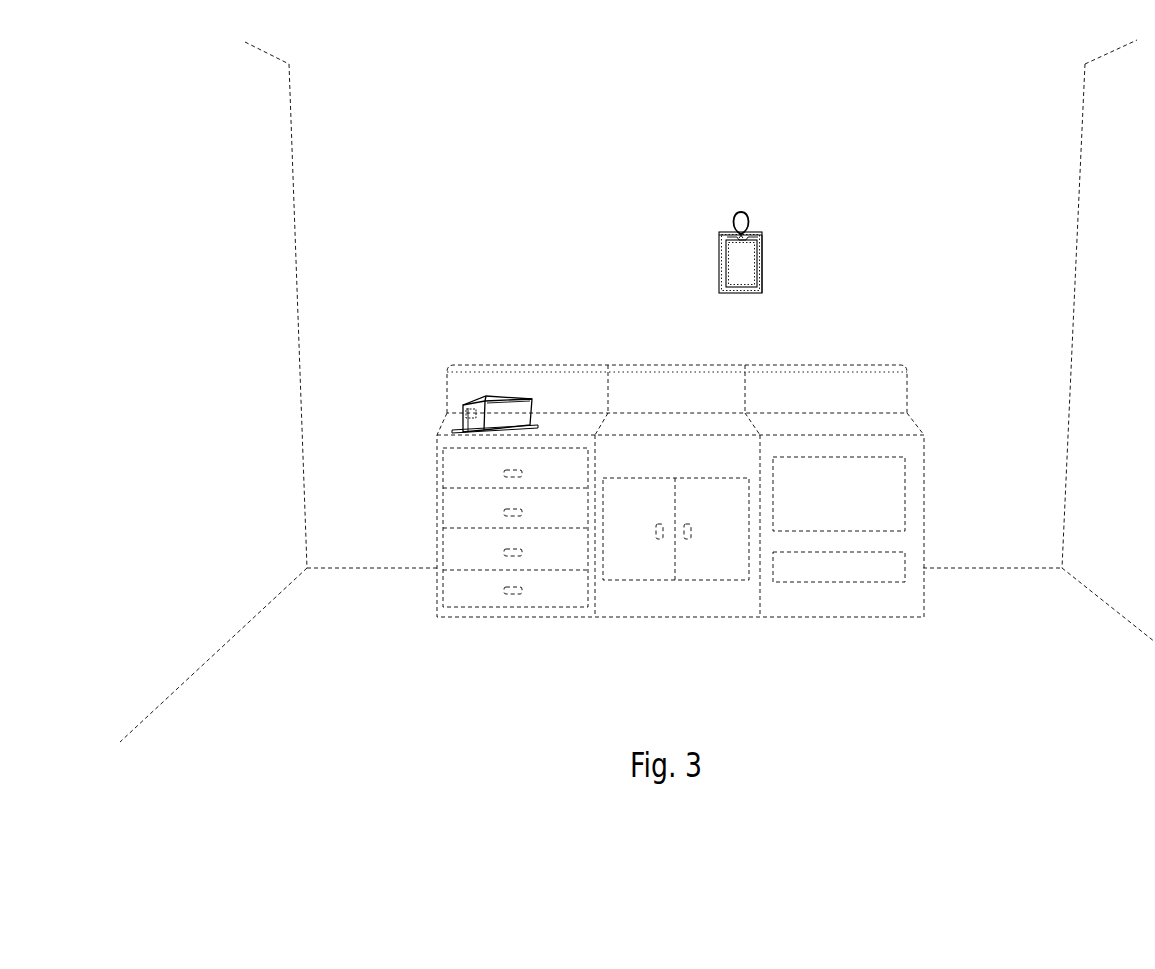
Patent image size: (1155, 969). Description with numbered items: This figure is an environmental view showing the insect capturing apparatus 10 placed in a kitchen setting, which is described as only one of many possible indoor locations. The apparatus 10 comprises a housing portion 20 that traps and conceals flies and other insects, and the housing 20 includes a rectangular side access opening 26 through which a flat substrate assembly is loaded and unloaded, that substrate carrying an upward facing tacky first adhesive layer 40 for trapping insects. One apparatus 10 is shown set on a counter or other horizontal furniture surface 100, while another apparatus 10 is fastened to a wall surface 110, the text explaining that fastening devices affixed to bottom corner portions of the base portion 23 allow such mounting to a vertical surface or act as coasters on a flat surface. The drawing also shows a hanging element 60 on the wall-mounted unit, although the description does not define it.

The insect capturing apparatus 10 is at (608, 293).
The housing portion 20 is at (608, 295).
The base portion 23 is at (763, 267).
The side access opening 26 is at (471, 411).
The first adhesive layer 40 is at (744, 257).
The hanging loop 60 is at (736, 212).
The horizontal furniture surface 100 is at (640, 420).
The wall surface 110 is at (452, 168).